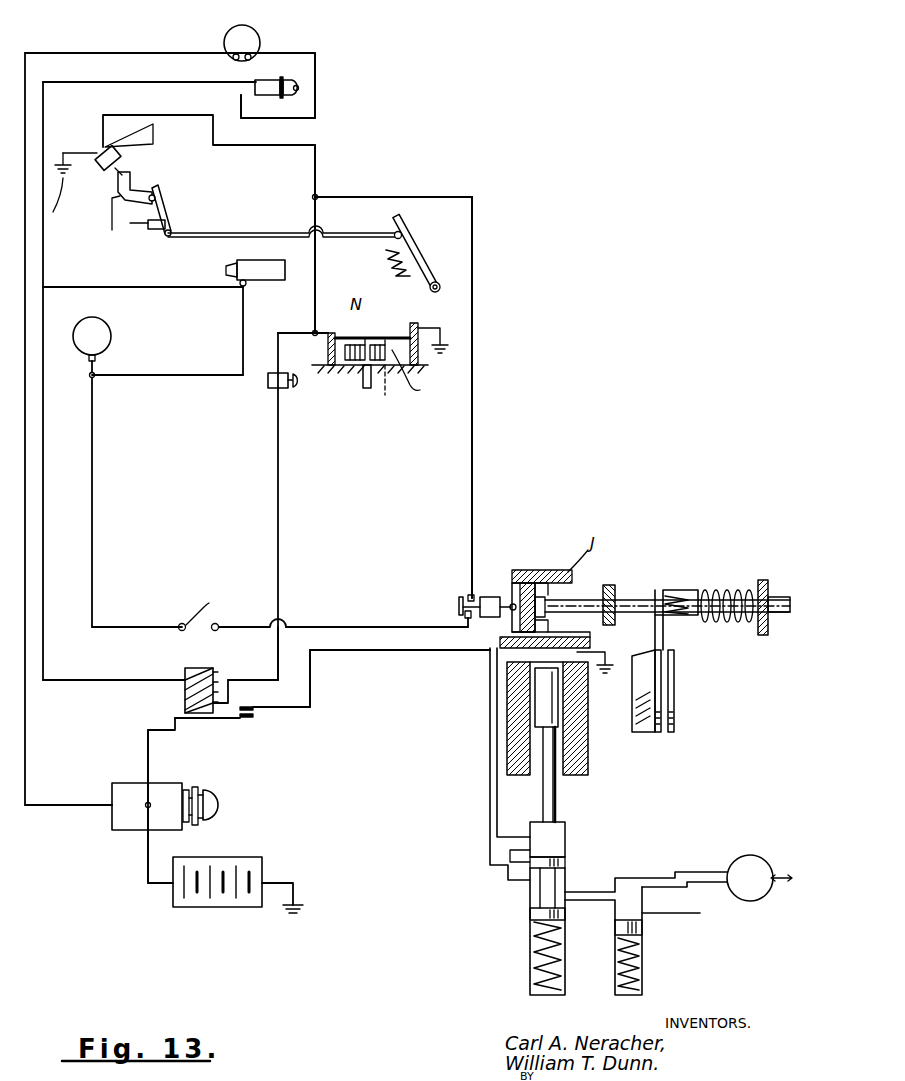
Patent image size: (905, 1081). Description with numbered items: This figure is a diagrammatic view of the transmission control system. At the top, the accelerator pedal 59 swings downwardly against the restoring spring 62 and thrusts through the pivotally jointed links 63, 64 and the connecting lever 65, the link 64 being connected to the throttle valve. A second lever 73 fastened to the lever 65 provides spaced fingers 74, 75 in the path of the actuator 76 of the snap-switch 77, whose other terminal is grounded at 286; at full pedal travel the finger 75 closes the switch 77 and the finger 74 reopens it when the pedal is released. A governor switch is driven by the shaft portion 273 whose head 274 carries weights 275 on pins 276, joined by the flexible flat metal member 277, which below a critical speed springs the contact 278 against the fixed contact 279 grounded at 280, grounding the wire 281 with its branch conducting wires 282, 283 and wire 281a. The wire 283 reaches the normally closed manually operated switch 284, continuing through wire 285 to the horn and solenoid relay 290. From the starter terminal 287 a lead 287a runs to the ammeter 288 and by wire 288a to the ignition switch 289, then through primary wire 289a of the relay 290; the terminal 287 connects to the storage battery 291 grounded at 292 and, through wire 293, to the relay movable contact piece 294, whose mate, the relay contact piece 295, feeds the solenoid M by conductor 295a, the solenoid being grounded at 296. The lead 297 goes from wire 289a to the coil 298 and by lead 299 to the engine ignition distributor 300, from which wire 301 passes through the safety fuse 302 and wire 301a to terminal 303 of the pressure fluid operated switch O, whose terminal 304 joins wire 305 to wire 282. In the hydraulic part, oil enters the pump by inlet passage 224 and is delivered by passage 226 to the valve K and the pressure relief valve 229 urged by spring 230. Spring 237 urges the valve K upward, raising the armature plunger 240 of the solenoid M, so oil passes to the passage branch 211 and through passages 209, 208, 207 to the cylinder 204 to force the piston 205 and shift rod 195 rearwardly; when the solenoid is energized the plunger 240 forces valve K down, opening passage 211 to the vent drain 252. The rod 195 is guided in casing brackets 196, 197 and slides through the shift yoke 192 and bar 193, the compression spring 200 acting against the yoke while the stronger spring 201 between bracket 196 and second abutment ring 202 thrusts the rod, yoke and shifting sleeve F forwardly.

The ammeter 288 is at (258, 35).
The ignition switch 289 is at (278, 83).
The wire 288a is at (315, 83).
The snap-switch 77 is at (103, 147).
The actuator 76 is at (116, 172).
The ground 286 is at (71, 203).
The finger 74 is at (125, 180).
The second lever 73 is at (147, 196).
The connecting lever 65 is at (165, 205).
The finger 75 is at (112, 230).
The link 64 is at (135, 226).
The link 63 is at (222, 235).
The accelerator pedal 59 is at (410, 232).
The restoring spring 62 is at (395, 252).
The conductor 281a is at (316, 172).
The branch conducting wire 282 is at (380, 197).
The wire 281 is at (316, 262).
The wire 305 is at (480, 430).
The lead 297 is at (160, 280).
The coil 298 is at (262, 272).
The branch conducting wire 283 is at (278, 333).
The engine ignition distributor 300 is at (100, 335).
The lead 299 is at (195, 365).
The electrical contact 278 is at (336, 320).
The head 274 is at (345, 352).
The fixed contact 279 is at (370, 340).
The flexible flat metal member 277 is at (382, 340).
The ground 280 is at (440, 335).
The shaft portion 273 is at (363, 386).
The pins 276 is at (395, 389).
The weights 275 is at (421, 375).
The manually operated switch 284 is at (268, 385).
The safety fuse 302 is at (205, 597).
The wire 301 is at (135, 628).
The primary wire 289a is at (44, 670).
The wire 285 is at (276, 660).
The wire 301a is at (358, 628).
The horn and solenoid relay 290 is at (185, 695).
The relay contact piece 295 is at (248, 705).
The relay movable contact piece 294 is at (250, 720).
The conductor 295a is at (330, 651).
The wire 293 is at (148, 752).
The lead 287a is at (52, 806).
The starter terminal 287 is at (148, 806).
The storage battery 291 is at (238, 857).
The ground 292 is at (300, 904).
The terminal 303 is at (465, 615).
The pressure fluid operated switch O is at (450, 595).
The piston 205 is at (545, 570).
The terminal 304 is at (512, 570).
The delivery passage 207 is at (500, 640).
The cylinder 204 is at (570, 598).
The shift rod 195 is at (600, 610).
The casing bracket 197 is at (612, 585).
The bar 193 is at (660, 590).
The compression spring 200 is at (685, 595).
The second abutment ring 202 is at (705, 590).
The spring 201 is at (762, 580).
The casing bracket 196 is at (775, 597).
The shift yoke 192 is at (660, 635).
The shifting sleeve F is at (672, 682).
The solenoid M is at (507, 708).
The armature plunger 240 is at (558, 720).
The ground 296 is at (606, 680).
The delivery passage 208 is at (490, 770).
The vent drain 252 is at (500, 836).
The horizontal branch passage 209 is at (508, 868).
The passage branch 211 is at (510, 882).
The valve K is at (550, 885).
The spring 237 is at (534, 955).
The passage 226 is at (645, 875).
The spring 230 is at (618, 972).
The pressure relief valve 229 is at (640, 935).
The inlet passage 224 is at (756, 840).